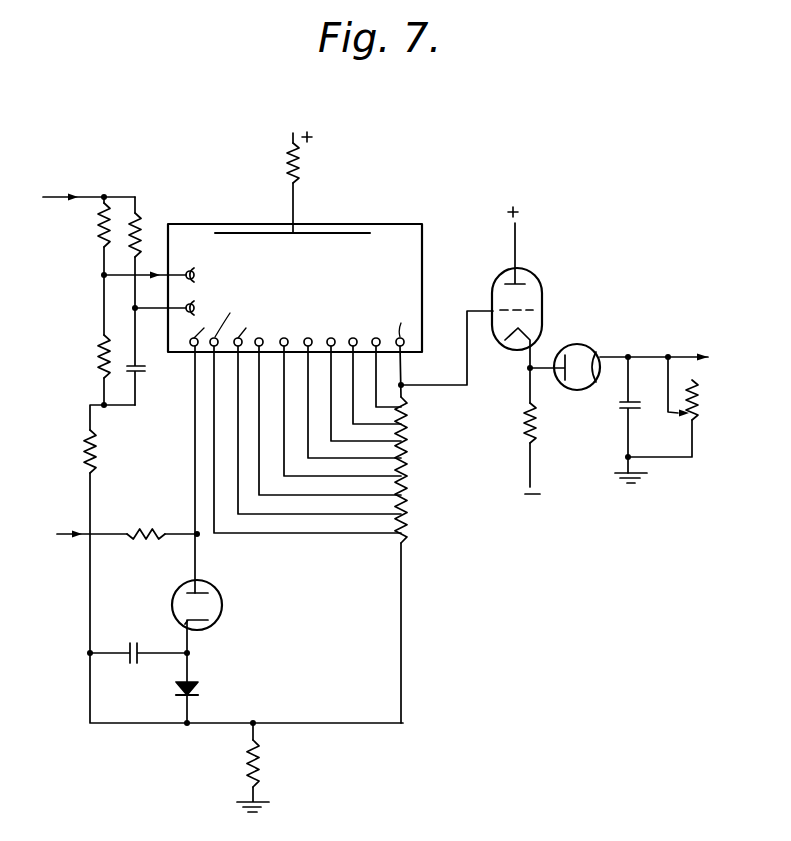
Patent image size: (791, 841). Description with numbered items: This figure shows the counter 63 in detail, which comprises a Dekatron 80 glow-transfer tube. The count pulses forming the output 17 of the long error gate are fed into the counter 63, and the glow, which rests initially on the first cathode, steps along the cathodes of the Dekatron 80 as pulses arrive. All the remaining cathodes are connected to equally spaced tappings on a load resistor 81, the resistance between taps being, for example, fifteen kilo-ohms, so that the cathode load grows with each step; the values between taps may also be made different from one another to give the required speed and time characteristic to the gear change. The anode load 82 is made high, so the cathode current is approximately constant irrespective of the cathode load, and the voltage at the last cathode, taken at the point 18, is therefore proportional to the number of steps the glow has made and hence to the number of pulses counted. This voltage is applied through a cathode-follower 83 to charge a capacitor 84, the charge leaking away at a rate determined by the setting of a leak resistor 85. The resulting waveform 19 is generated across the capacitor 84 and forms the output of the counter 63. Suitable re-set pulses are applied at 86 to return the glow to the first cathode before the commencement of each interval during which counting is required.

The output of the long error gate 17 is at (89, 184).
The output terminal of counting tube 18 is at (445, 364).
The voltage waveform 19 is at (658, 344).
The counter 63 is at (339, 206).
The Dekatron 80 is at (402, 230).
The load resistor 81 is at (408, 468).
The anode load 82 is at (284, 160).
The cathode-follower 83 is at (542, 300).
The capacitor 84 is at (620, 407).
The leak resistor 85 is at (690, 423).
The re-set pulse input 86 is at (80, 540).